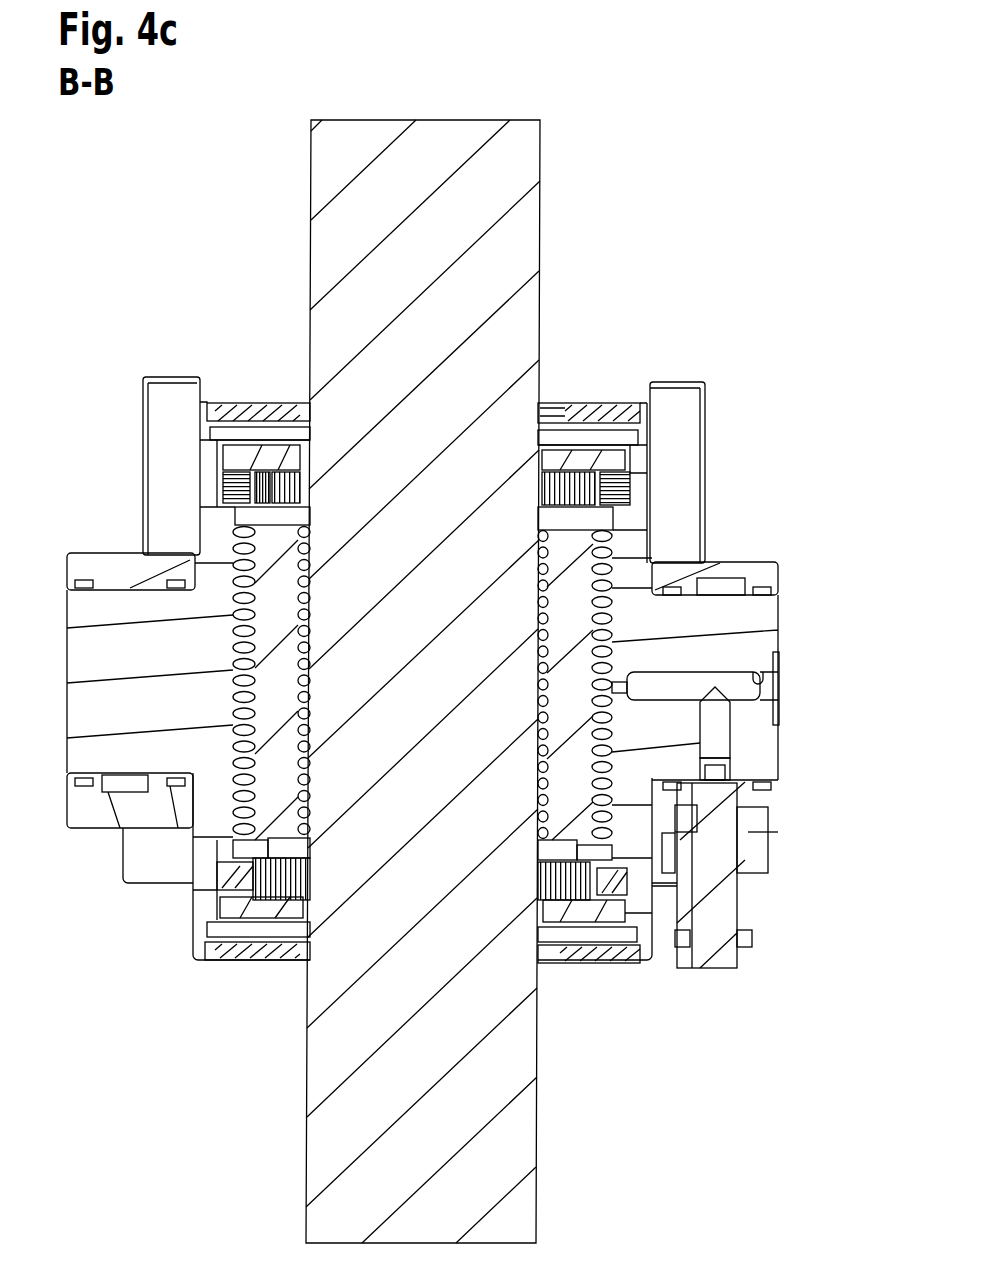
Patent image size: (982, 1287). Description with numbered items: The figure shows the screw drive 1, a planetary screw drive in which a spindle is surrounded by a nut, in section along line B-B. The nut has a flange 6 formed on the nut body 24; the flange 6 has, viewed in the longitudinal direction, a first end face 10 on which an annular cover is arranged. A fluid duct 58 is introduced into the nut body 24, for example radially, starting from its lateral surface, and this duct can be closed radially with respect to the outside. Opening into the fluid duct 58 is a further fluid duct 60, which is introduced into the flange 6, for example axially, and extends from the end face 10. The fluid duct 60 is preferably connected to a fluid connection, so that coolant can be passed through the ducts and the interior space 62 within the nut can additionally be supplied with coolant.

The screw drive 1 is at (710, 122).
The flange 6 is at (120, 608).
The first end face 10 is at (725, 790).
The nut body 24 is at (77, 757).
The fluid duct 58 is at (757, 679).
The fluid duct 60 is at (722, 733).
The interior space 62 is at (566, 620).